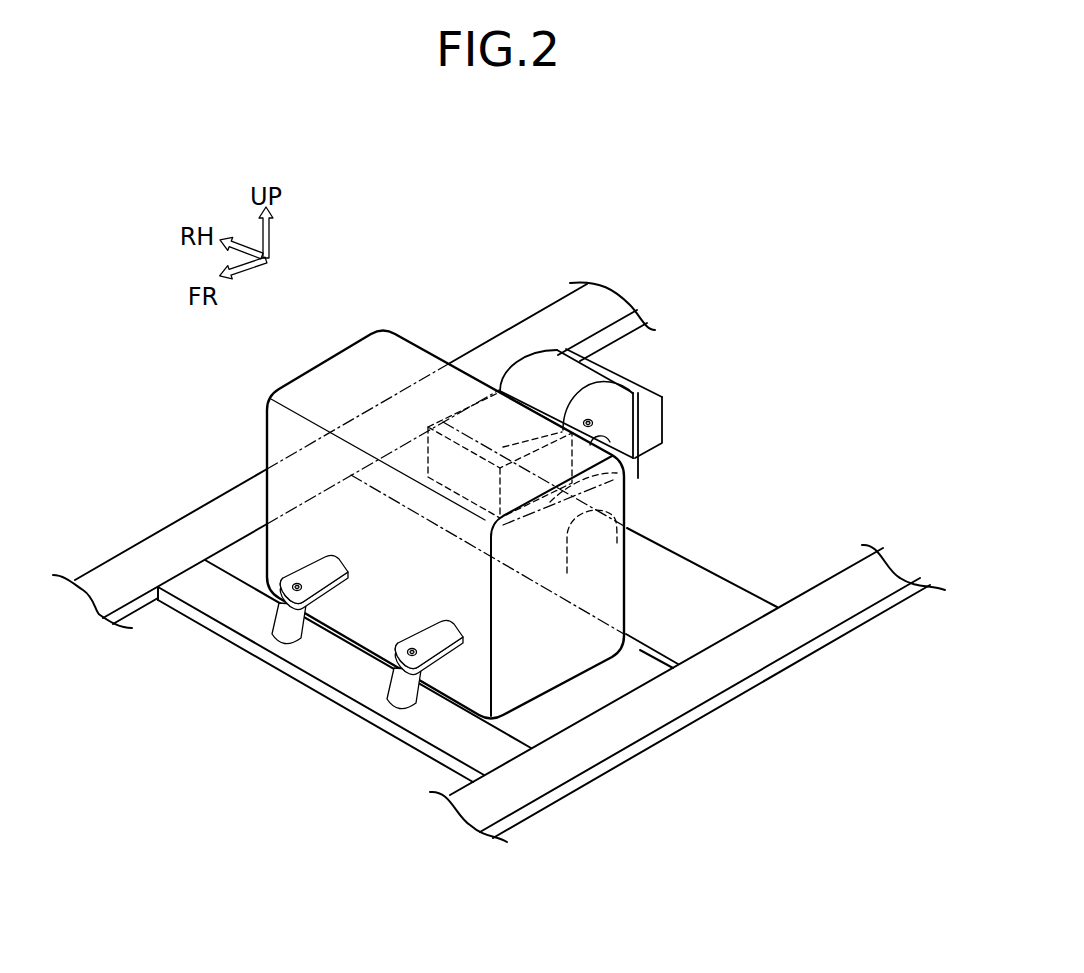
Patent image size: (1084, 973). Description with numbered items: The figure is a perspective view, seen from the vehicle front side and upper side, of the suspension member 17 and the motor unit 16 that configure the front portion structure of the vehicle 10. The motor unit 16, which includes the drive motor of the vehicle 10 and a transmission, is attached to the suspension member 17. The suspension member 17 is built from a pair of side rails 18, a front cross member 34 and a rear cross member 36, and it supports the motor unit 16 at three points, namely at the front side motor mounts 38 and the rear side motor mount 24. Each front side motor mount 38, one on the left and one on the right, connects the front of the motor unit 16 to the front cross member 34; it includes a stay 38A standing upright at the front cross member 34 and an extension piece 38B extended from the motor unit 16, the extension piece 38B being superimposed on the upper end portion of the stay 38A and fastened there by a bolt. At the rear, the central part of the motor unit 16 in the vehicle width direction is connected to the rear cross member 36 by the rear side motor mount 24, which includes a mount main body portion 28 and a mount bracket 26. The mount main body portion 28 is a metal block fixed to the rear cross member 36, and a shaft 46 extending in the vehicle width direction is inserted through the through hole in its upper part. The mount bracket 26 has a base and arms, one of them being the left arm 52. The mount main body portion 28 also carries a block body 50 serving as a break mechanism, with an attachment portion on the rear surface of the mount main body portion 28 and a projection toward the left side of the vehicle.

The vehicle 10 is at (368, 250).
The motor unit 16 is at (328, 356).
The suspension member 17 is at (476, 293).
The side rails 18 is at (157, 530).
The rear side motor mount 24 is at (541, 330).
The mount bracket 26 is at (440, 414).
The mount main body portion 28 is at (602, 368).
The front cross member 34 is at (213, 633).
The rear cross member 36 is at (728, 572).
The front side motor mount 38 is at (330, 613).
The stay 38A is at (274, 636).
The extension piece 38B is at (318, 562).
The shaft 46 is at (620, 433).
The block body 50 is at (668, 420).
The left arm 52 is at (640, 458).